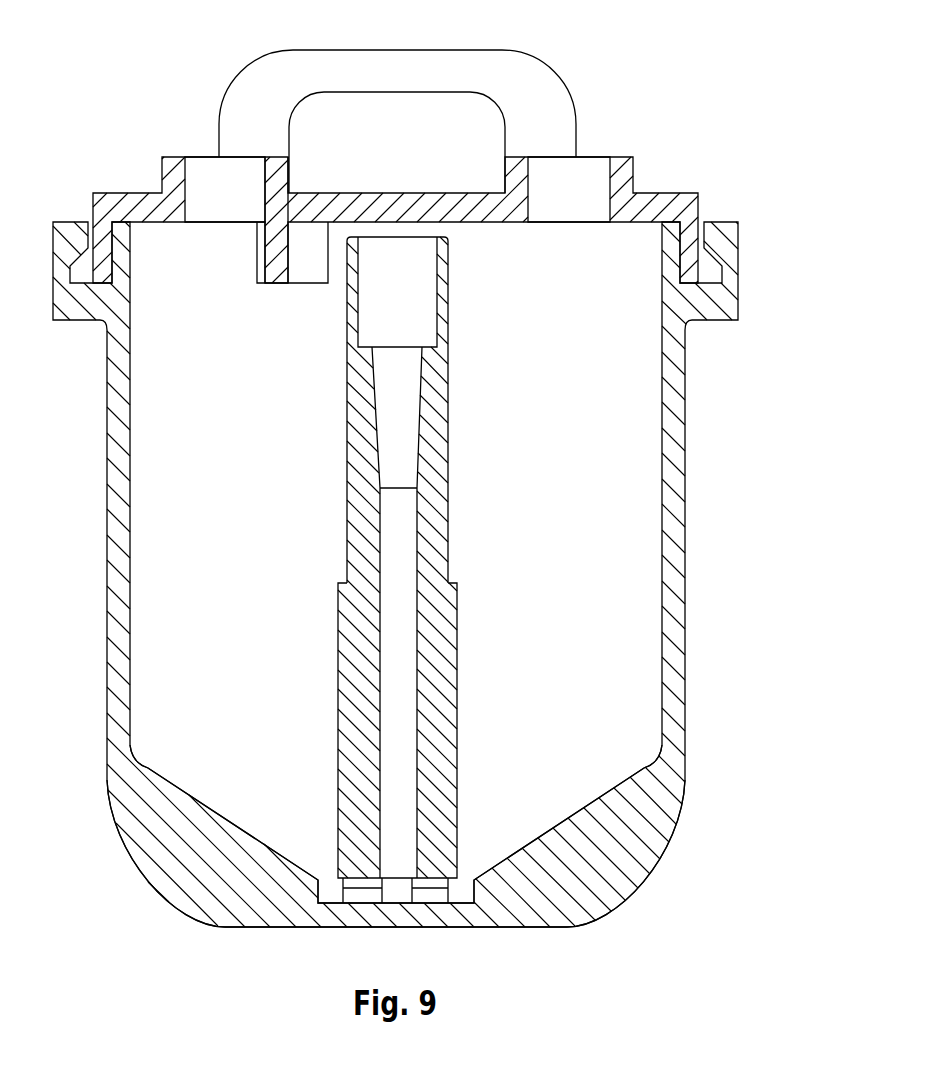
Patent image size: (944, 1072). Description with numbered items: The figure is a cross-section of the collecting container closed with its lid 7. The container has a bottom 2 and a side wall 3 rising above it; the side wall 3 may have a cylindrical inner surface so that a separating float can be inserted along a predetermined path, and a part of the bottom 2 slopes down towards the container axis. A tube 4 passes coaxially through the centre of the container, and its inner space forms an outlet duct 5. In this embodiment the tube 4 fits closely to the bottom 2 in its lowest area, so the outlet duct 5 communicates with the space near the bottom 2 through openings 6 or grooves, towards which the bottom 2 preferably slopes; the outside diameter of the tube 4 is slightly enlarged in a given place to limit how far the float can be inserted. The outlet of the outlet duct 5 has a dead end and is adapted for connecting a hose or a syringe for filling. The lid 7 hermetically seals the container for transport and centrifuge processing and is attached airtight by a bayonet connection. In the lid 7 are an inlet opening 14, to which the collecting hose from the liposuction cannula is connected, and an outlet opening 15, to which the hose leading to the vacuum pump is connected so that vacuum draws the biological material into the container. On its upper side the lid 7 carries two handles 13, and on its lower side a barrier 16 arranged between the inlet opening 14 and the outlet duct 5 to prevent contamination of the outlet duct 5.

The bottom 2 is at (490, 863).
The side wall 3 is at (670, 548).
The tube 4 is at (440, 760).
The outlet duct 5 is at (402, 438).
The openings 6 is at (432, 898).
The lid 7 is at (660, 193).
The handle 13 is at (542, 108).
The inlet opening 14 is at (572, 190).
The outlet opening 15 is at (219, 190).
The barrier 16 is at (275, 270).